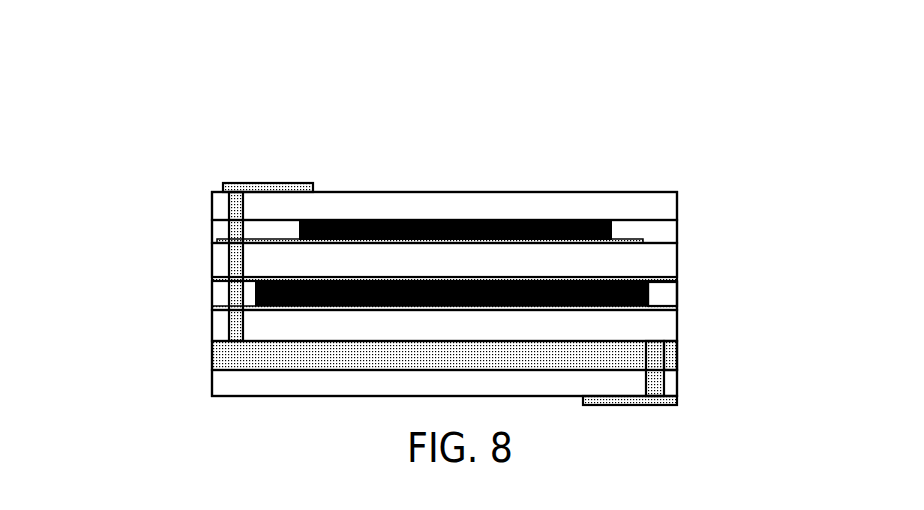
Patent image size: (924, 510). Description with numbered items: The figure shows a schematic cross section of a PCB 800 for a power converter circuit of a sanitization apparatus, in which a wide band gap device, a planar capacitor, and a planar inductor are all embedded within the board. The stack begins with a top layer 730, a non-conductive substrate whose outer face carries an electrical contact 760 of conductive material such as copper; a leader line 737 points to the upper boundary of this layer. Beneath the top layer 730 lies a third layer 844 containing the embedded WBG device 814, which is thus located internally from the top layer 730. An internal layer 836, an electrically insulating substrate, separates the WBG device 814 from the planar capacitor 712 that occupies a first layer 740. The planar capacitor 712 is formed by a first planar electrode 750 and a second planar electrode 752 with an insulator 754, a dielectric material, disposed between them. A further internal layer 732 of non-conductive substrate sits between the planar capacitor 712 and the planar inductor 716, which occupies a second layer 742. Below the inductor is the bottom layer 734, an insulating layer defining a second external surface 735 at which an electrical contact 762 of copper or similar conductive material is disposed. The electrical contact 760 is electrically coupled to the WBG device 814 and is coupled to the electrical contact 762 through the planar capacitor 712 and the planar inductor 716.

The PCB 800 is at (240, 84).
The top layer 730 is at (191, 203).
The third layer 844 is at (410, 192).
The WBG device 814 is at (533, 218).
The internal layer 836 is at (191, 264).
The first layer 740 is at (498, 232).
The insulator 754 is at (633, 292).
The first planar electrode 750 is at (657, 283).
The planar capacitor 712 is at (695, 292).
The second planar electrode 752 is at (655, 307).
The internal layer 732 is at (191, 324).
The second layer 742 is at (469, 356).
The planar inductor 716 is at (695, 355).
The bottom layer 734 is at (191, 382).
The second external surface 735 is at (277, 397).
The top surface 737 is at (633, 191).
The electrical contact 760 is at (236, 182).
The electrical contact 762 is at (634, 406).